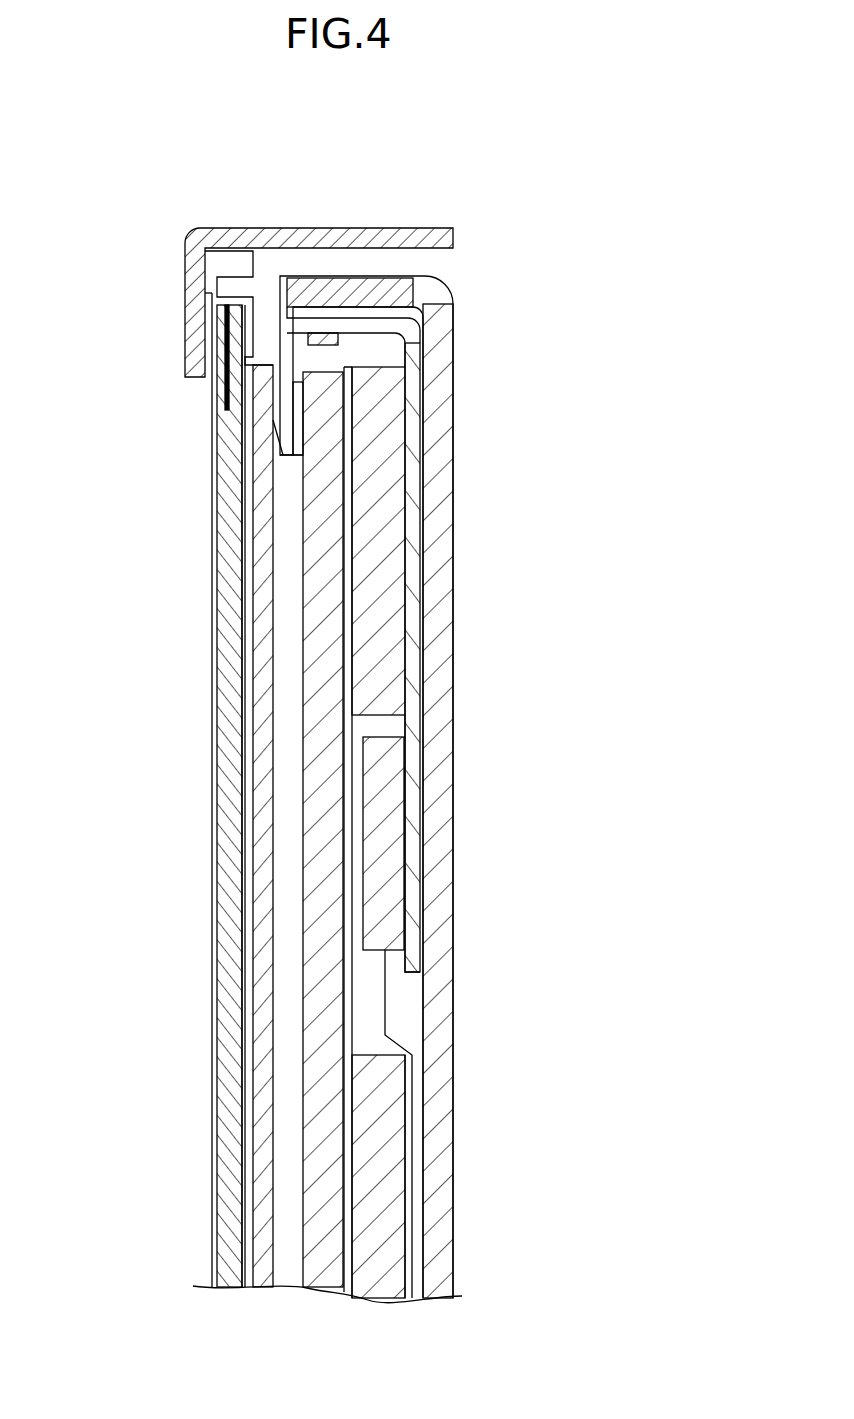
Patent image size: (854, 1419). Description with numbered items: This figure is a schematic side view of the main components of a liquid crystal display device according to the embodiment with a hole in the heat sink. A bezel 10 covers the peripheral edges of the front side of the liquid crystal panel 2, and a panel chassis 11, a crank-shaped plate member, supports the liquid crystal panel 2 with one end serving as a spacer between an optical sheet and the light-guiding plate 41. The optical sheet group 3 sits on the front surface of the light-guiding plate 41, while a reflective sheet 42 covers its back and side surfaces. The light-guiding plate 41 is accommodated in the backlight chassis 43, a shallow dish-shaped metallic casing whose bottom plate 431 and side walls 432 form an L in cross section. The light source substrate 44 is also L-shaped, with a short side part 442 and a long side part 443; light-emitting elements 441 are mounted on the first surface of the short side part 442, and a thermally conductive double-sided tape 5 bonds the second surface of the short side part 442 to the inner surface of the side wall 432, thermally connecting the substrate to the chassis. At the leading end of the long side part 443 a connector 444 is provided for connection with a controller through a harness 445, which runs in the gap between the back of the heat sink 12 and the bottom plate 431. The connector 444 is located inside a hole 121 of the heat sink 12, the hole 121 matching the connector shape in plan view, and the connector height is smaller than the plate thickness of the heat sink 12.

The liquid crystal panel 2 is at (223, 542).
The optical sheet group 3 is at (260, 610).
The double-sided tape 5 is at (338, 313).
The bezel 10 is at (188, 305).
The panel chassis 11 is at (237, 283).
The heat sink 12 is at (368, 678).
The hole 121 is at (367, 1055).
The light-guiding plate 41 is at (345, 1105).
The reflective sheet 42 is at (357, 1180).
The backlight chassis 43 is at (642, 240).
The bottom plate 431 is at (455, 375).
The side wall 432 is at (402, 270).
The light source substrate 44 is at (642, 430).
The light-emitting element 441 is at (327, 347).
The short side part 442 is at (373, 327).
The long side part 443 is at (413, 573).
The connector 444 is at (387, 734).
The harness 445 is at (380, 1005).